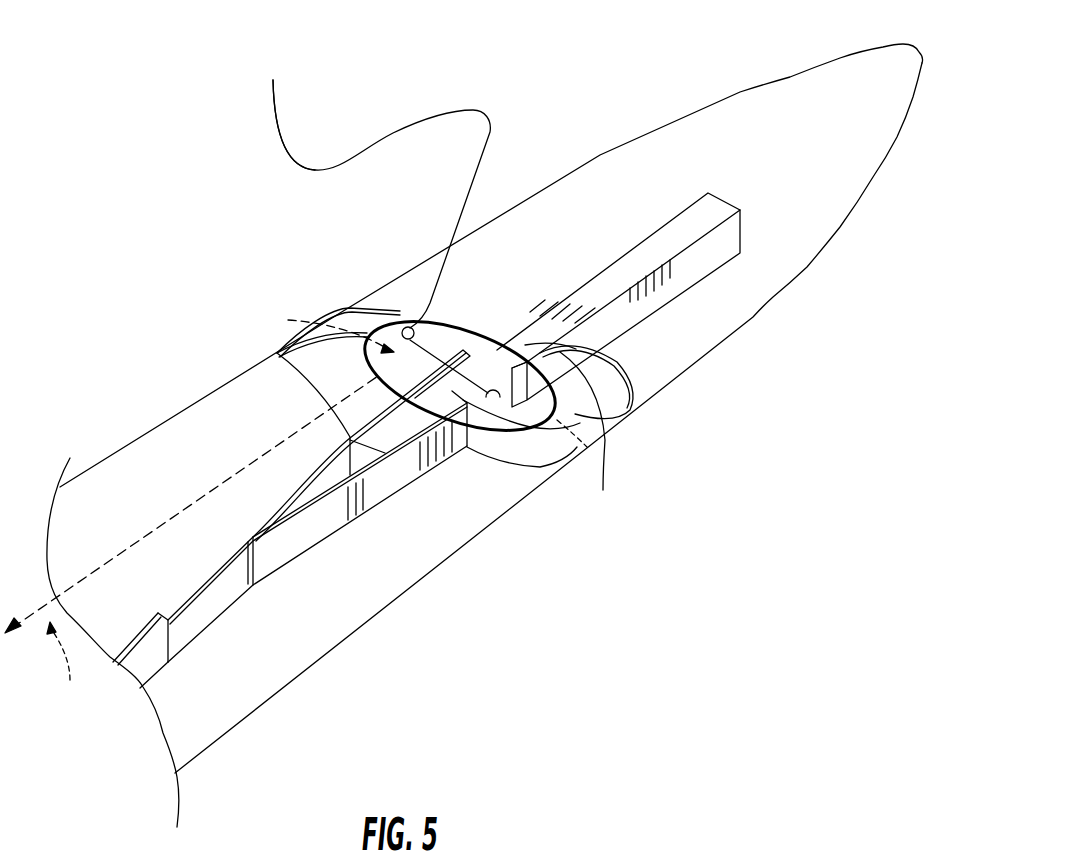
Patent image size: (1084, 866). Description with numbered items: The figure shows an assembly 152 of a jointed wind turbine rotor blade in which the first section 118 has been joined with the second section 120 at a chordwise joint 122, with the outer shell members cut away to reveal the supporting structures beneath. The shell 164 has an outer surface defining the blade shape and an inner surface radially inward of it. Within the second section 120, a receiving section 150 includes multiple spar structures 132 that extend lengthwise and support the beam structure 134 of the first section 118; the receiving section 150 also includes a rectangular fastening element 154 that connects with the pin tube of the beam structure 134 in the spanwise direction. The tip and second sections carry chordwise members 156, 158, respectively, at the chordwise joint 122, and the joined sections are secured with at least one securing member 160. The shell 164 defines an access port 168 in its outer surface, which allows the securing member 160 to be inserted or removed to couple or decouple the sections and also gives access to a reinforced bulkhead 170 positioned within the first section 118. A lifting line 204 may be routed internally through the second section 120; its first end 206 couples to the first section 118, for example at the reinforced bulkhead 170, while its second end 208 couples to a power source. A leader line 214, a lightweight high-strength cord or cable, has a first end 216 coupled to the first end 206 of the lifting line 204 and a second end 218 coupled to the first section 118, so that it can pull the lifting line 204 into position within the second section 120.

The first section 118 is at (668, 115).
The second section 120 is at (113, 452).
The chordwise joint 122 is at (593, 445).
The spar structures 132 is at (280, 493).
The beam structure 134 is at (652, 252).
The receiving section 150 is at (435, 540).
The assembly 152 is at (203, 201).
The rectangular fastening element 154 is at (347, 440).
The chordwise member 156 is at (618, 390).
The chordwise member 158 is at (538, 478).
The securing member 160 is at (499, 392).
The shell 164 is at (576, 349).
The access port 168 is at (578, 454).
The reinforced bulkhead 170 is at (443, 348).
The lifting line 204 is at (152, 528).
The first end 206 is at (355, 330).
The second end 208 is at (67, 664).
The leader line 214 is at (345, 158).
The first end 216 is at (415, 310).
The second end 218 is at (289, 89).